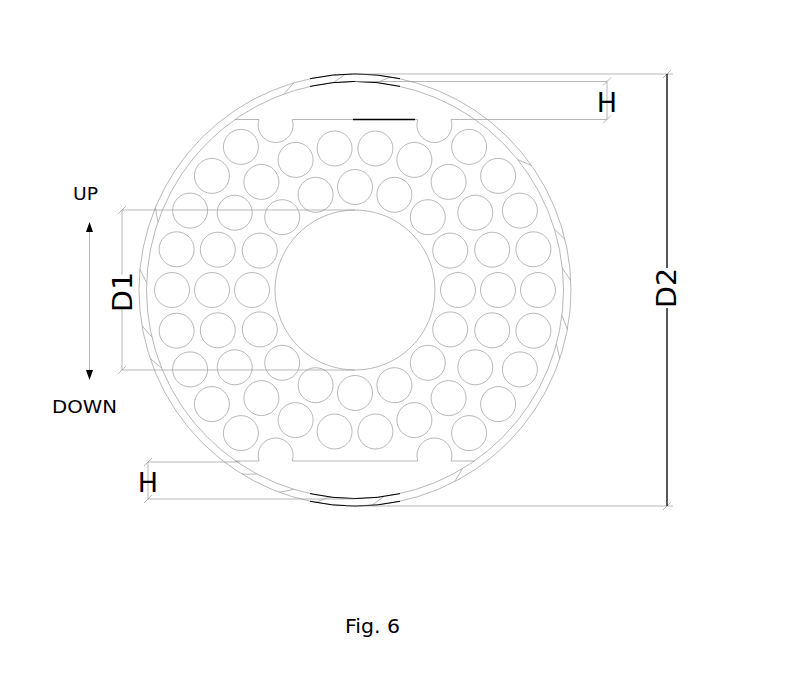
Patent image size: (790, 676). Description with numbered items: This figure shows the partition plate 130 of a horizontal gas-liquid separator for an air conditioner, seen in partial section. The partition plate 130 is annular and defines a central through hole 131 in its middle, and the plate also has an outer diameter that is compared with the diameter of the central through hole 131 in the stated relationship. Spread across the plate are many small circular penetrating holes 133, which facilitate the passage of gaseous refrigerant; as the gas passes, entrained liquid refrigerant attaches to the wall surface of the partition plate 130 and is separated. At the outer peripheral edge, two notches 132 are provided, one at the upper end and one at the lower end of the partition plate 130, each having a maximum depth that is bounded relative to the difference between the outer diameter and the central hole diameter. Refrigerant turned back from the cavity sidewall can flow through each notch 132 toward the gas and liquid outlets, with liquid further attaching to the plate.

The partition plate 130 is at (125, 108).
The central through hole 131 is at (365, 318).
The notch 132 is at (325, 99).
The penetrating hole 133 is at (520, 212).